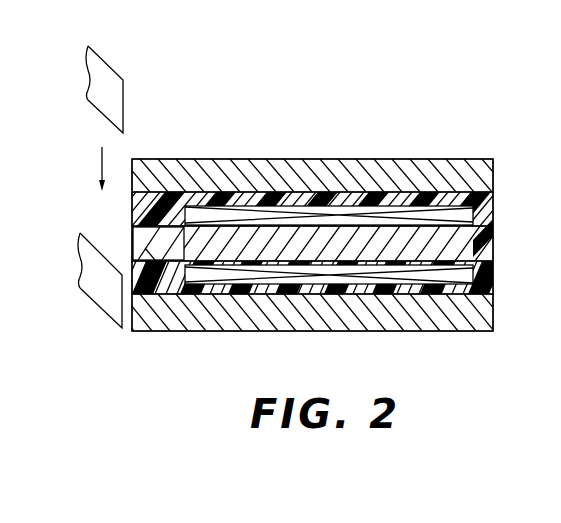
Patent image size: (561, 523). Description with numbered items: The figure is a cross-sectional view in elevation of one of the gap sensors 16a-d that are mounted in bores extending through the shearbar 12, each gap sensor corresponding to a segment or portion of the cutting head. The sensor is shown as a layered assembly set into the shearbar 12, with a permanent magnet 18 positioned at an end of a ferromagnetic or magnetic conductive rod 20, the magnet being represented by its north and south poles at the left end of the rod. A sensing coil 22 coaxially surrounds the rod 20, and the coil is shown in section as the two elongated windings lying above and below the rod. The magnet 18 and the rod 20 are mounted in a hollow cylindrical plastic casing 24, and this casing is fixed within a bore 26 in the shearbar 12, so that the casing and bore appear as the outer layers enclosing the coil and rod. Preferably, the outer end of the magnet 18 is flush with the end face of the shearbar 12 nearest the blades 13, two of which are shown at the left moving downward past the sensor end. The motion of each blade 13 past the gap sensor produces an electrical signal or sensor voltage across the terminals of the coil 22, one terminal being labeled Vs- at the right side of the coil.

The shearbar 12 is at (308, 162).
The bore 26 is at (358, 192).
The magnetic conductive rod 20 is at (475, 245).
The sensing coil 22 is at (318, 287).
The hollow cylindrical plastic casing 24 is at (221, 294).
The permanent magnet 18 is at (132, 231).
The blade 13 is at (103, 115).
The gap sensors 16a-d is at (312, 100).
The sensor voltage Vs- is at (470, 270).